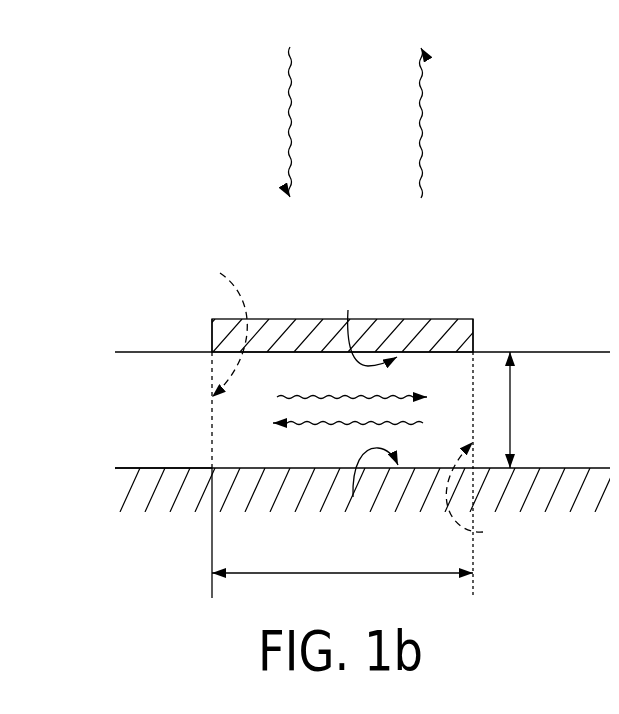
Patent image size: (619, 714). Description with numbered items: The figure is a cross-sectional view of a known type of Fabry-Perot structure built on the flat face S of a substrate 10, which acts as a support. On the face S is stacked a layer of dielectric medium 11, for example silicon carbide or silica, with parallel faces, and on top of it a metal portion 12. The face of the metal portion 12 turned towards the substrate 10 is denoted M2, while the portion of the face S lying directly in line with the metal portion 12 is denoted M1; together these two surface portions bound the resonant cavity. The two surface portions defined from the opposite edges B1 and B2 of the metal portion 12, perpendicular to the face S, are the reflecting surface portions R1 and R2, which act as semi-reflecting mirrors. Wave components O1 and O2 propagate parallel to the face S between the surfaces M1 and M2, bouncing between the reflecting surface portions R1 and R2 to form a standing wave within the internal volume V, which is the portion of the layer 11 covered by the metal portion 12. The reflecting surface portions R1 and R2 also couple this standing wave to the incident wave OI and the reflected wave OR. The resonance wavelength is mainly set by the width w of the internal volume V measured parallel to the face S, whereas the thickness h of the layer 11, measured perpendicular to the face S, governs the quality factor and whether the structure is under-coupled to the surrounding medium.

The substrate 10 is at (177, 552).
The layer of dielectric medium 11 is at (593, 452).
The metal portion 12 is at (428, 330).
The internal volume V is at (250, 459).
The thickness of the layer h is at (521, 410).
The width of the internal volume w is at (342, 589).
The flat face of the substrate S is at (147, 463).
The first edge of the metal portion B1 is at (212, 338).
The second edge of the metal portion B2 is at (473, 340).
The incident wave OI is at (290, 103).
The reflected wave OR is at (421, 102).
The first wave component O1 is at (332, 397).
The second wave component O2 is at (332, 420).
The portion of the face S M1 is at (363, 491).
The face of the metal portion M2 is at (363, 320).
The first portion of reflecting surface R1 is at (223, 318).
The second portion of reflecting surface R2 is at (488, 495).